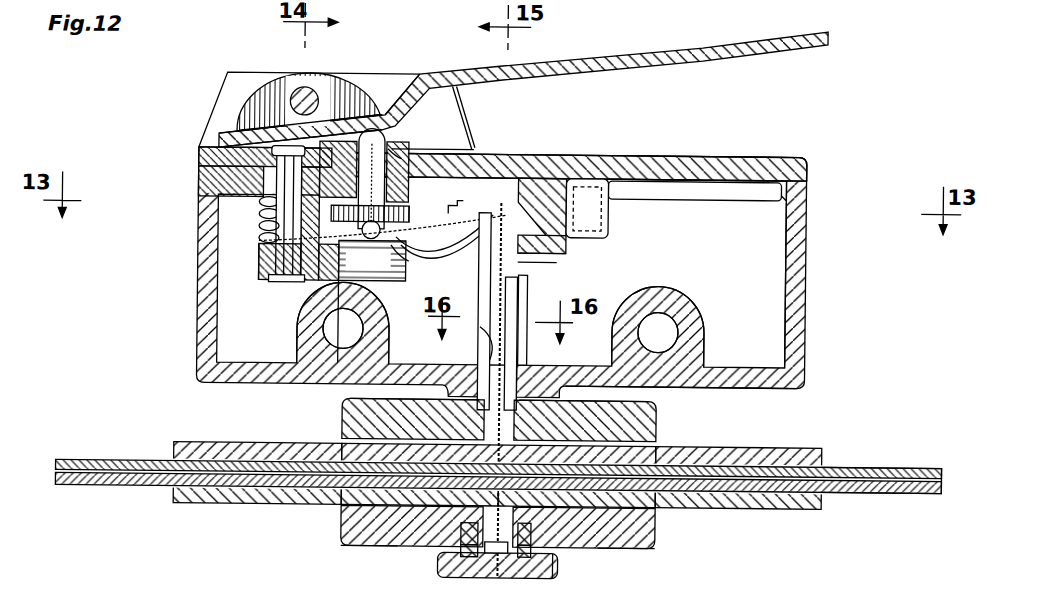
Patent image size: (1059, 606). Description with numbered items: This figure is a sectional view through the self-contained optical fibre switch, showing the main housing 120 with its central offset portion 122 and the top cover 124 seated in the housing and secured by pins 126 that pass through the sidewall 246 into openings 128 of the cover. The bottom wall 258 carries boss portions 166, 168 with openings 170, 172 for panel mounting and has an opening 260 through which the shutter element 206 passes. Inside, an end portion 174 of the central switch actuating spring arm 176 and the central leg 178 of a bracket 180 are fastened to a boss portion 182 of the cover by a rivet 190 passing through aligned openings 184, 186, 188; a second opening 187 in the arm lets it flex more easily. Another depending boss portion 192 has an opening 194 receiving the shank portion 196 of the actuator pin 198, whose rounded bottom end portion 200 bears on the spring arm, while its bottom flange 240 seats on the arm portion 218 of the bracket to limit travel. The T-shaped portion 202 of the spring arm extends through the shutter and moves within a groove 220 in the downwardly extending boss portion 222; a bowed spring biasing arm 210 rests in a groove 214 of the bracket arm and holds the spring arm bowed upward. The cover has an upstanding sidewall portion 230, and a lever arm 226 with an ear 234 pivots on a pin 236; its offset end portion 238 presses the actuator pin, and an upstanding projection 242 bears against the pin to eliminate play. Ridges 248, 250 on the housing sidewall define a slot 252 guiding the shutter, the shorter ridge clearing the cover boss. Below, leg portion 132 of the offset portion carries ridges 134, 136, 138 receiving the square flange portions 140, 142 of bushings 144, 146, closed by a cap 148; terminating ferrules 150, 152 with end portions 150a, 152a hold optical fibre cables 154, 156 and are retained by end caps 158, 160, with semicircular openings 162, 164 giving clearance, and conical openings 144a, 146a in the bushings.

The main housing 120 is at (803, 290).
The central offset portion 122 is at (535, 398).
The top cover 124 is at (772, 153).
The pins 126 is at (600, 158).
The openings of the cover 128 is at (618, 205).
The leg portion 132 is at (492, 578).
The ridge 134 is at (463, 556).
The ridge 136 is at (514, 558).
The ridge 138 is at (543, 560).
The square flange portion 140 is at (524, 366).
The square flange portion 142 is at (470, 372).
The optical fibre cable bushing 144 is at (645, 550).
The conical opening 144a is at (657, 525).
The optical fibre cable bushing 146 is at (357, 550).
The conical opening 146a is at (343, 523).
The bottom cover or cap 148 is at (562, 573).
The terminating ferrule 150 is at (765, 507).
The end portion of ferrule 150a is at (657, 426).
The terminating ferrule 152 is at (268, 507).
The end portion of ferrule 152a is at (345, 422).
The optical fibre cable 154 is at (893, 464).
The optical fibre cable 156 is at (108, 462).
The end cap 158 is at (665, 536).
The end cap 160 is at (345, 530).
The semicircular opening 162 is at (352, 401).
The semicircular opening 164 is at (462, 532).
The boss portion 166 is at (702, 335).
The boss portion 168 is at (297, 326).
The opening 170 is at (665, 330).
The opening 172 is at (328, 334).
The end portion of spring arm 174 is at (258, 229).
The central switch actuating spring arm 176 is at (512, 196).
The central leg of bracket 178 is at (270, 284).
The bracket 180 is at (256, 276).
The boss portion 182 is at (198, 185).
The opening 184 is at (258, 205).
The opening 186 is at (258, 243).
The second opening 187 is at (336, 258).
The opening 188 is at (258, 262).
The rivet 190 is at (199, 157).
The depending boss portion 192 is at (466, 148).
The opening 194 is at (464, 123).
The shank portion 196 is at (403, 96).
The actuator pin 198 is at (386, 150).
The rounded bottom end portion 200 is at (383, 282).
The T-shaped portion 202 is at (568, 253).
The shutter element 206 is at (548, 262).
The spring biasing arm 210 is at (462, 258).
The groove 214 is at (416, 246).
The arm portion of bracket 218 is at (402, 260).
The groove 220 is at (556, 178).
The downwardly extending boss portion 222 is at (607, 228).
The lever arm 226 is at (738, 55).
The upstanding sidewall portion 230 is at (230, 82).
The ear 234 is at (262, 124).
The pin 236 is at (312, 92).
The offset end portion 238 is at (335, 121).
The bottom flange 240 is at (469, 206).
The upstanding projection 242 is at (287, 96).
The sidewall 246 is at (782, 236).
The ridge 248 is at (488, 332).
The ridge 250 is at (527, 312).
The slot 252 is at (517, 300).
The bottom wall 258 is at (770, 389).
The opening 260 is at (480, 330).